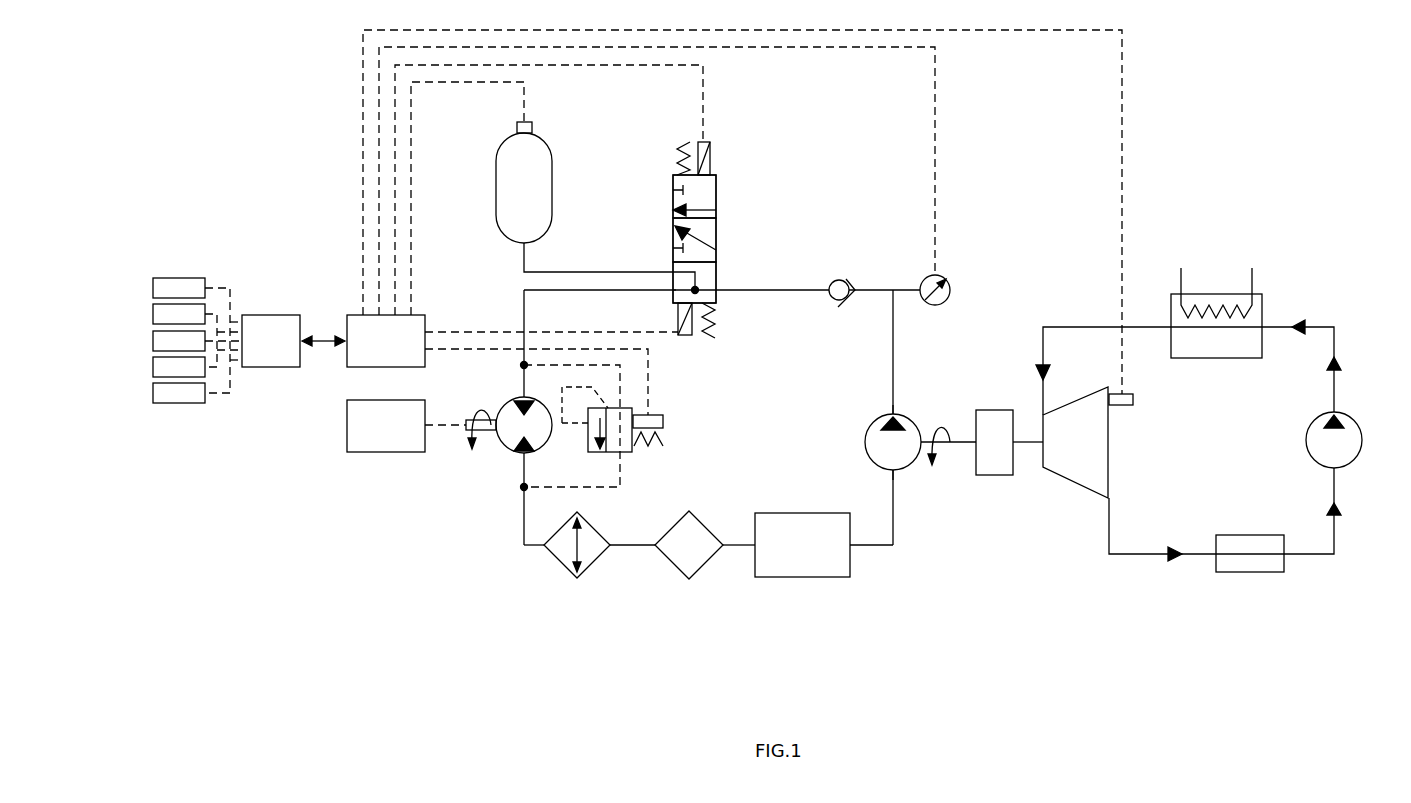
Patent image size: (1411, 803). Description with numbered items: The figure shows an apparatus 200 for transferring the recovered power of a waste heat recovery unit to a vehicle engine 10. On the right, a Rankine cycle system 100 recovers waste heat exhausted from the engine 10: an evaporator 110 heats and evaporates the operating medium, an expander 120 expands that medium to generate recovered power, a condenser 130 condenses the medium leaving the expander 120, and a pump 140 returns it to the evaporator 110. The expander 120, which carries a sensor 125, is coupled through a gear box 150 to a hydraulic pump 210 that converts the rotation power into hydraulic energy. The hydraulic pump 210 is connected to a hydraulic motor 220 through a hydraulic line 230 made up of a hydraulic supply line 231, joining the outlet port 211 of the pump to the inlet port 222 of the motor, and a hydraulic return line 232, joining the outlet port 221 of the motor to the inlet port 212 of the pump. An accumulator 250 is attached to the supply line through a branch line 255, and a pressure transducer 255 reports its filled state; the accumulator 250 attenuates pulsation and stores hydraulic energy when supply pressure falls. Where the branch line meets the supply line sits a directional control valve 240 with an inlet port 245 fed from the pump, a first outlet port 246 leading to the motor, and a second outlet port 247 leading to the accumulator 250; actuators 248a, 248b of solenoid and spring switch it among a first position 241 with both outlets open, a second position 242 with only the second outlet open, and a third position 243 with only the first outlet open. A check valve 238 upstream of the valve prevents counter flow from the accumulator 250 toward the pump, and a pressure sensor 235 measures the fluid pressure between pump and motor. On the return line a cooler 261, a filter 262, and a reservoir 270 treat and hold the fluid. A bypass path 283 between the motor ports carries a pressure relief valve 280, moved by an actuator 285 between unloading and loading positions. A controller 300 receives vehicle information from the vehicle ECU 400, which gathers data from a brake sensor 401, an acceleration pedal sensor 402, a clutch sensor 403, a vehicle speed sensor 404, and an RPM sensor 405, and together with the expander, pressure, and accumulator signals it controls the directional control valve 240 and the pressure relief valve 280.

The engine 10 is at (385, 452).
The Rankine cycle system 100 is at (1329, 271).
The evaporator 110 is at (1262, 358).
The expander 120 is at (1109, 442).
The sensor of the expander 125 is at (1133, 400).
The condenser 130 is at (1252, 535).
The pump 140 is at (1352, 420).
The gear box 150 is at (995, 410).
The apparatus 200 is at (859, 186).
The hydraulic pump 210 is at (908, 432).
The outlet port of the hydraulic pump 211 is at (893, 414).
The inlet port of the hydraulic pump 212 is at (895, 470).
The hydraulic motor 220 is at (510, 436).
The outlet port of the hydraulic motor 221 is at (524, 452).
The inlet port of the hydraulic motor 222 is at (520, 397).
The hydraulic line 230 is at (803, 362).
The hydraulic supply line 231 is at (777, 292).
The hydraulic return line 232 is at (738, 543).
The pressure sensor 235 is at (940, 277).
The check valve 238 is at (836, 280).
The directional control valve 240 is at (726, 168).
The first position 241 is at (716, 272).
The second position 242 is at (716, 228).
The third position 243 is at (716, 187).
The inlet port 245 is at (716, 208).
The first outlet port 246 is at (673, 210).
The second outlet port 247 is at (673, 189).
The actuator 248a is at (684, 335).
The actuator 248b is at (710, 150).
The accumulator 250 is at (553, 143).
The branch line 255 is at (517, 127).
The cooler 261 is at (577, 578).
The filter 262 is at (689, 578).
The reservoir 270 is at (802, 577).
The pressure relief valve 280 is at (642, 462).
The bypass path 283 is at (545, 488).
The actuator 285 is at (663, 421).
The controller 300 is at (425, 318).
The electronic control unit 400 is at (272, 315).
The brake sensor 401 is at (153, 288).
The acceleration pedal sensor 402 is at (153, 314).
The clutch sensor 403 is at (153, 341).
The vehicle speed sensor 404 is at (153, 367).
The RPM sensor 405 is at (153, 393).